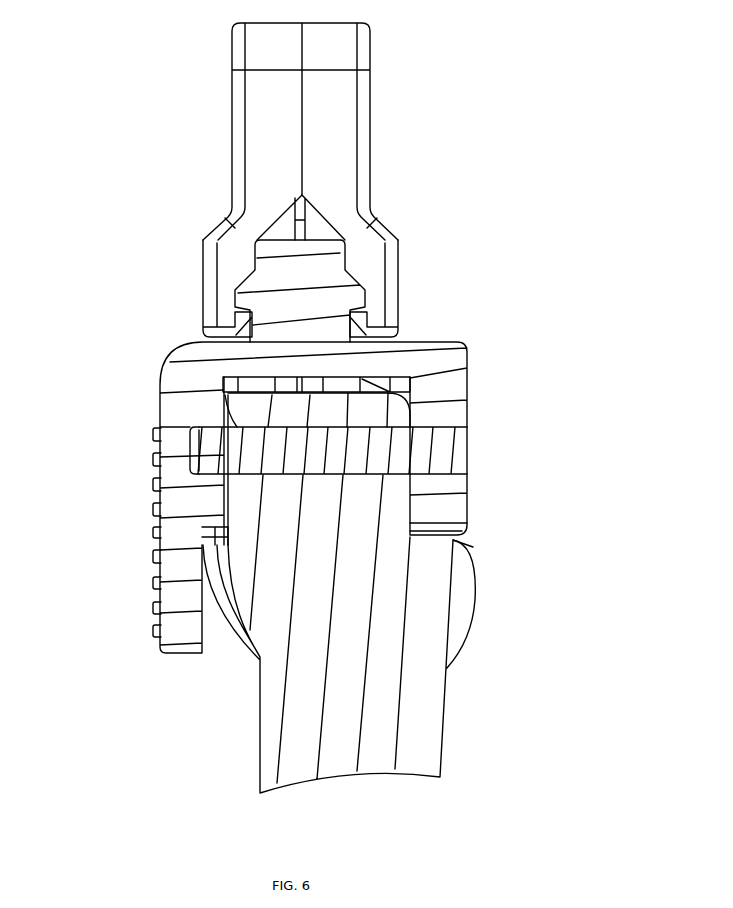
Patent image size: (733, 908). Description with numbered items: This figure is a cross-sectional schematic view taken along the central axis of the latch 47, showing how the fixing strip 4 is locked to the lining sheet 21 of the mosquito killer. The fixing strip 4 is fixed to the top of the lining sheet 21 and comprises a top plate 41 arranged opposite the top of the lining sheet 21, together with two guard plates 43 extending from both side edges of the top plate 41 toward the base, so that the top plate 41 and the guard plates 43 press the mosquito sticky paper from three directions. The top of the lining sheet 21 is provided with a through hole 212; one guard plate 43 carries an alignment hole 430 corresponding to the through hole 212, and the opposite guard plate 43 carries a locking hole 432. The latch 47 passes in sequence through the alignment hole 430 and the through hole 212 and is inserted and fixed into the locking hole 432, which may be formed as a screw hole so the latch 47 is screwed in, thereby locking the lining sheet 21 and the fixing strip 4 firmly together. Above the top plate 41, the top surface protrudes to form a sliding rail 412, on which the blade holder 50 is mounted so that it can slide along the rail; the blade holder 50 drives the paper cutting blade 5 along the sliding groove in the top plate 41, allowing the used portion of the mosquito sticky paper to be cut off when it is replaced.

The blade holder 50 is at (335, 118).
The paper cutting blade 5 is at (298, 222).
The sliding rail 412 is at (305, 298).
The fixing strip 4 is at (485, 378).
The top plate 41 is at (282, 363).
The through hole 212 is at (237, 423).
The alignment hole 430 is at (468, 427).
The latch 47 is at (428, 450).
The locking hole 432 is at (193, 468).
The guard plate 43 is at (177, 505).
The lining sheet 21 is at (302, 714).